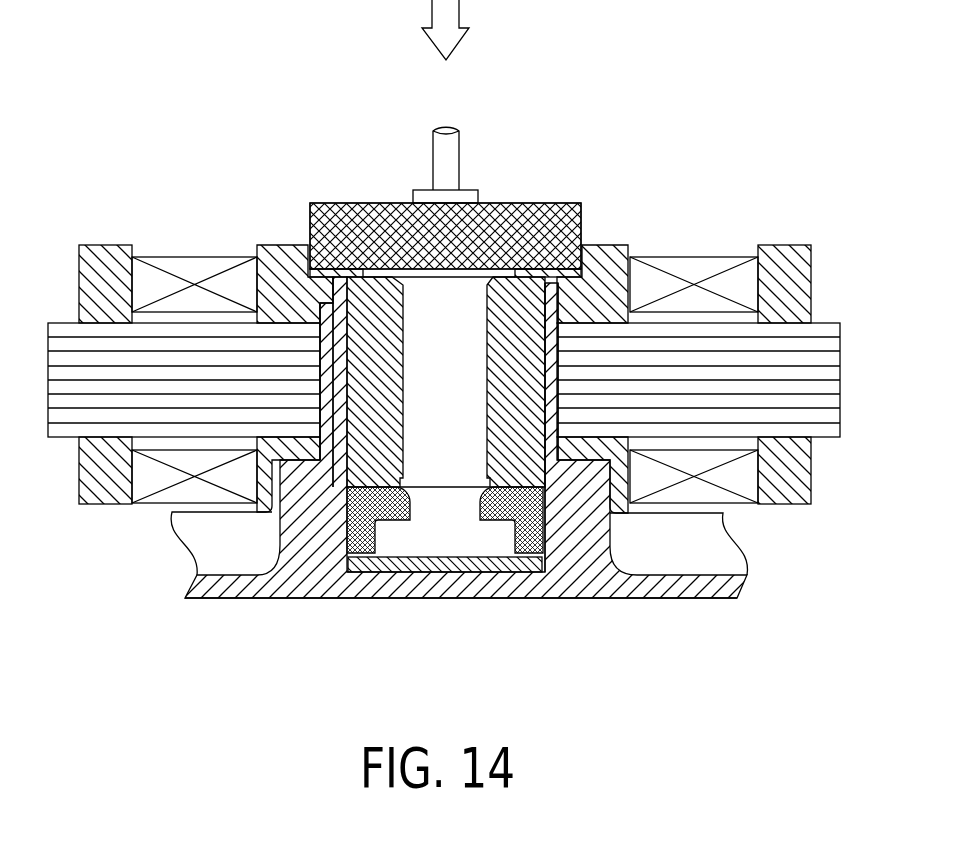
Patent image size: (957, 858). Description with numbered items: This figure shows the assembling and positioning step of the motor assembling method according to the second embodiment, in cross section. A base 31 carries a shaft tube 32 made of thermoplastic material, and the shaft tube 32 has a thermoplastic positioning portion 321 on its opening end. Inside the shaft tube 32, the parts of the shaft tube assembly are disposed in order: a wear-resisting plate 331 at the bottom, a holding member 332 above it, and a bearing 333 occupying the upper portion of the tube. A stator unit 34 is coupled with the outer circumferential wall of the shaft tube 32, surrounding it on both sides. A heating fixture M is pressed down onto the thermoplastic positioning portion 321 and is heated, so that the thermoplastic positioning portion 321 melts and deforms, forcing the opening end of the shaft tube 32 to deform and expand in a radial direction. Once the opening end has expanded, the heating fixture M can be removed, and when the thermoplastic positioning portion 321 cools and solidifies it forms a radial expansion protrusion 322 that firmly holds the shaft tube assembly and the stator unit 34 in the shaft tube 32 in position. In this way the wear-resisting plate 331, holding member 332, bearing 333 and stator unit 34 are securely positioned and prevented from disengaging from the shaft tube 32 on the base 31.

The heating fixture M is at (310, 225).
The radial expansion protrusion 322 is at (582, 230).
The stator unit 34 is at (783, 233).
The shaft tube 32 is at (553, 383).
The base 31 is at (700, 588).
The thermoplastic positioning portion 321 is at (553, 280).
The bearing 333 is at (381, 303).
The holding member 332 is at (520, 530).
The wear-resisting plate 331 is at (407, 567).